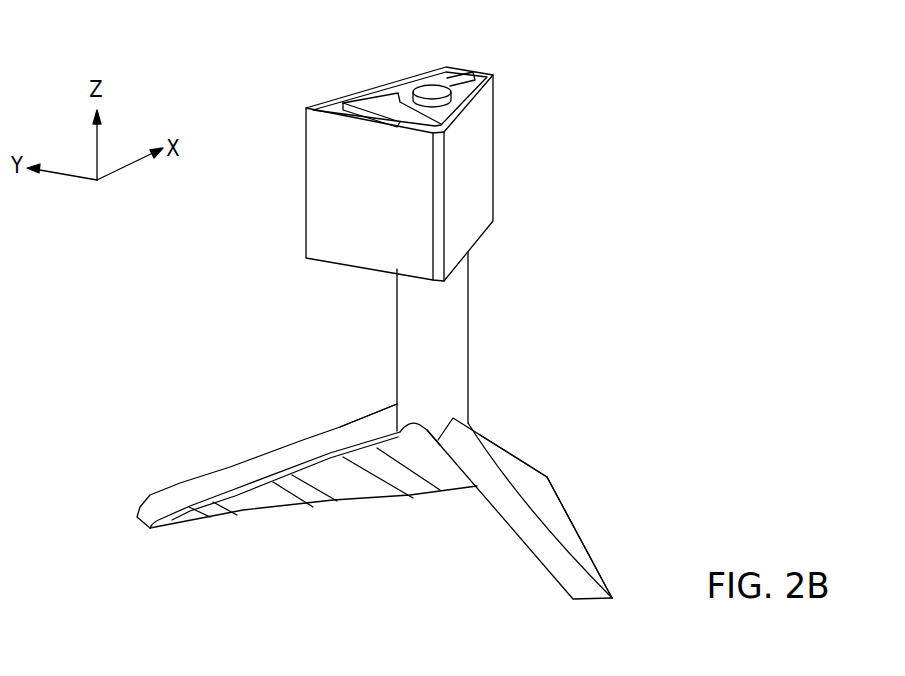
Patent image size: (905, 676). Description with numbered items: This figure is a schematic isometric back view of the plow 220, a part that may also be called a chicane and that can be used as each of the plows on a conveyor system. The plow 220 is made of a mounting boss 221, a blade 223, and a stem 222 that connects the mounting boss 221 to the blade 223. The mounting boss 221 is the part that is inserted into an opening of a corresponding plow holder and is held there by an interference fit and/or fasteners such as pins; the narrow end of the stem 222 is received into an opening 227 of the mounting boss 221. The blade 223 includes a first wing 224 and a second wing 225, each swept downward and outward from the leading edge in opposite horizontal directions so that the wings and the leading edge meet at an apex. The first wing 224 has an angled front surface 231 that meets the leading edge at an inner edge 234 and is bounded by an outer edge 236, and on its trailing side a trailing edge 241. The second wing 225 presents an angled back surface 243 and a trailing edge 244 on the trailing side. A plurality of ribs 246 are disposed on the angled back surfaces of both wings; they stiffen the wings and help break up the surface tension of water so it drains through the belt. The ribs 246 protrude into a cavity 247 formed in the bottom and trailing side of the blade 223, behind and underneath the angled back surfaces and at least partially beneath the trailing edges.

The plow 220 is at (565, 452).
The mounting boss 221 is at (552, 49).
The stem 222 is at (453, 293).
The blade 223 is at (166, 465).
The first wing 224 is at (606, 567).
The second wing 225 is at (214, 459).
The opening 227 is at (428, 90).
The angled front surface 231 is at (613, 537).
The inner edge 234 is at (510, 454).
The outer edge 236 is at (567, 456).
The trailing edge 241 is at (542, 543).
The angled back surface 243 is at (363, 483).
The trailing edge 244 is at (320, 443).
The ribs 246 is at (218, 521).
The cavity 247 is at (368, 546).